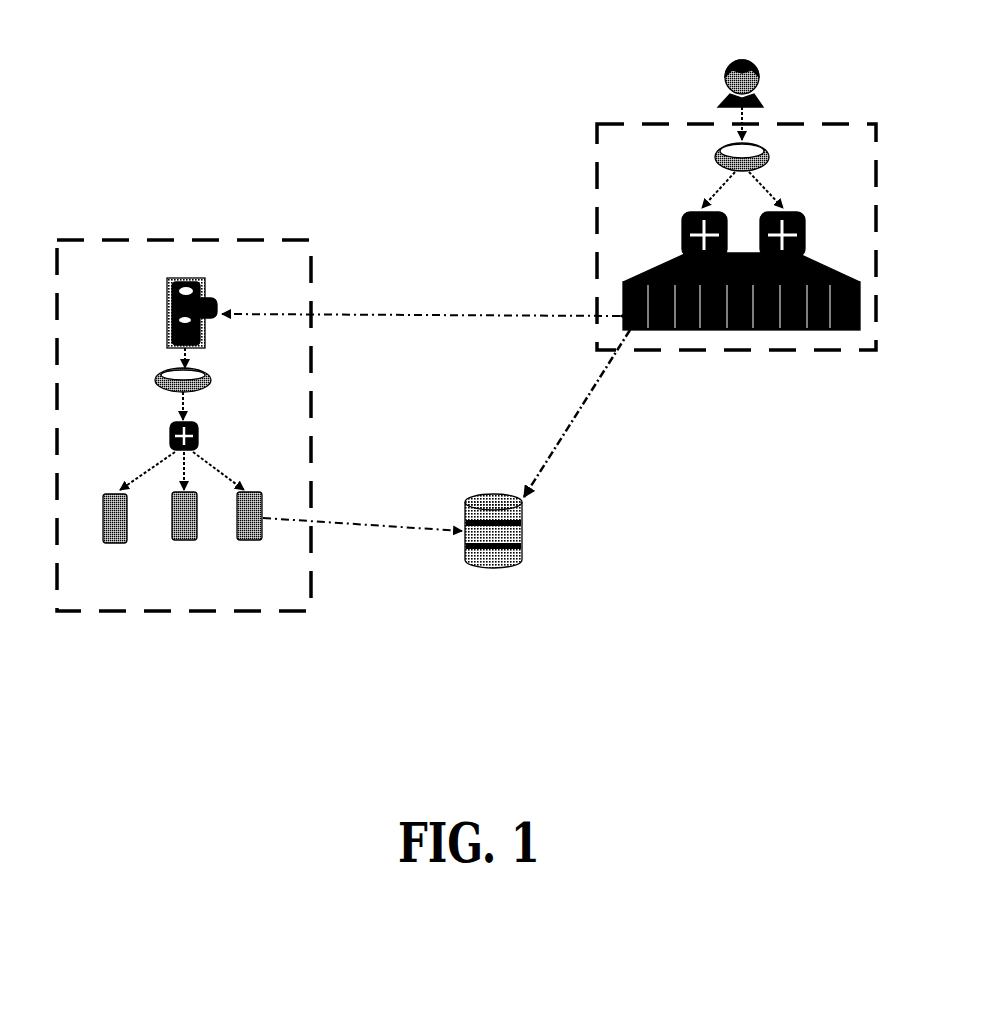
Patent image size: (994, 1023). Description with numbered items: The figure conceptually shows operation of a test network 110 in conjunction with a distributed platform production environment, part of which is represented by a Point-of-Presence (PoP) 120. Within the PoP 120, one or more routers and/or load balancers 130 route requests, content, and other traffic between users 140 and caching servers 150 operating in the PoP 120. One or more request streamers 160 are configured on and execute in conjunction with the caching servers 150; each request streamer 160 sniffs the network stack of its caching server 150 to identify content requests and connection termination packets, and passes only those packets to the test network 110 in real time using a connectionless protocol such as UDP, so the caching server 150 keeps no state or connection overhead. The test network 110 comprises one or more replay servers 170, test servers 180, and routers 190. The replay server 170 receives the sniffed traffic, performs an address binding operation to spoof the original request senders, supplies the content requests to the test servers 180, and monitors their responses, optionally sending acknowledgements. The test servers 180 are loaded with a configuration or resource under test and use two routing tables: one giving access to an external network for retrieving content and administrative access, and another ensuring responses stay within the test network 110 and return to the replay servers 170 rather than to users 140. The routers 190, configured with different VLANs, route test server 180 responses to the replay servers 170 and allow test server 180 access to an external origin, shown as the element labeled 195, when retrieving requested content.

The test network 110 is at (310, 239).
The Point-of-Presence (PoP) 120 is at (597, 125).
The routers and/or load balancers 130 is at (713, 152).
The users 140 is at (728, 57).
The caching servers 150 is at (628, 297).
The request streamer 160 is at (630, 320).
The replay server 170 is at (175, 297).
The test servers 180 is at (243, 543).
The routers 190 is at (168, 433).
The origin server 195 is at (498, 557).